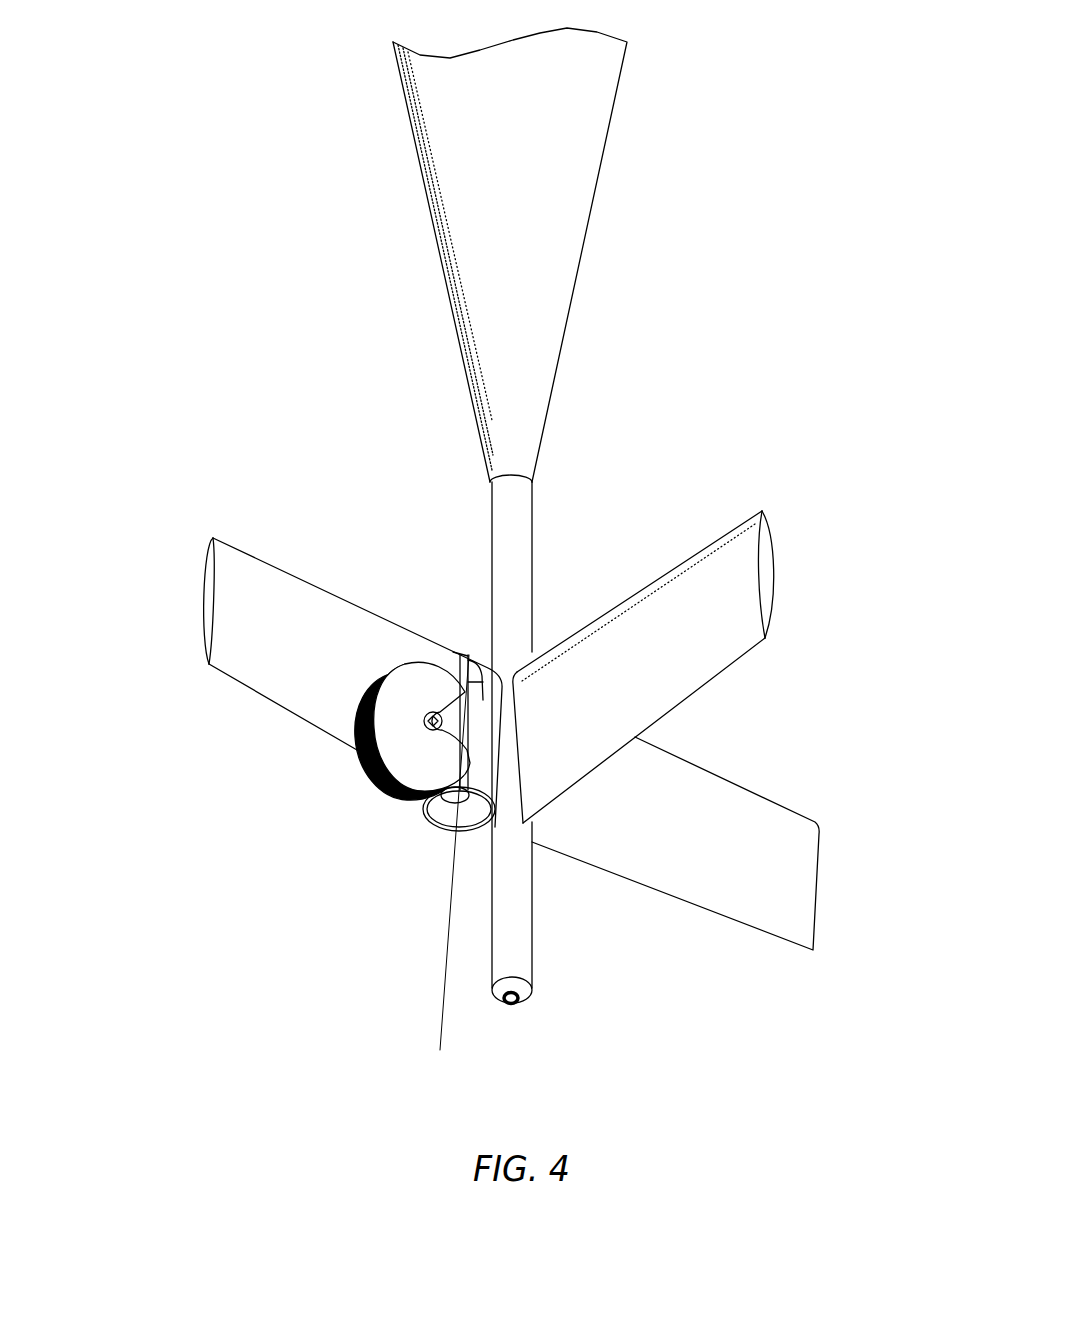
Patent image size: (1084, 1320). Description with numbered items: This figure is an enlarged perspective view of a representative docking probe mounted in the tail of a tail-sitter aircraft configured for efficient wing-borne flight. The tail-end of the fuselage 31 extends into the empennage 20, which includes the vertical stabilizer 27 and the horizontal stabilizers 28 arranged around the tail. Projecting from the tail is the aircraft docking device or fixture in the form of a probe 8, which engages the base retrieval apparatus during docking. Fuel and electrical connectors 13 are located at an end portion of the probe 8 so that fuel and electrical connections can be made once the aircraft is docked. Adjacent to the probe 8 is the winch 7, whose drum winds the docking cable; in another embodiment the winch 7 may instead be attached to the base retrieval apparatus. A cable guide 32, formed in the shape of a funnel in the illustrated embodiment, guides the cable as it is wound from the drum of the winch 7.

The empennage 20 is at (230, 840).
The fuselage 31 is at (608, 174).
The probe 8 is at (537, 893).
The fuel and electrical connectors 13 is at (517, 1013).
The vertical stabilizer 27 is at (722, 520).
The horizontal stabilizers 28 is at (257, 545).
The winch 7 is at (380, 795).
The cable guide 32 is at (428, 836).